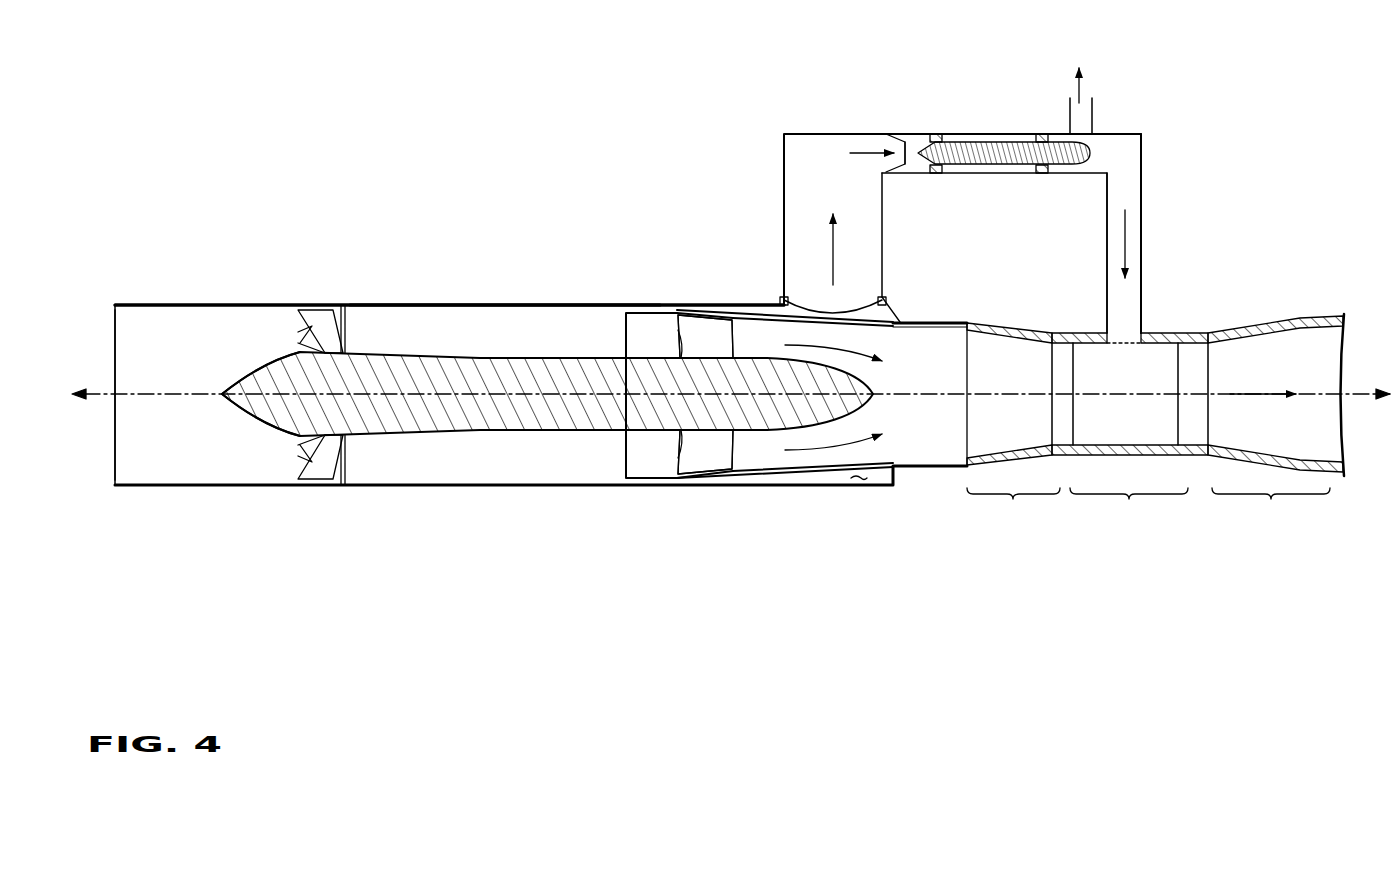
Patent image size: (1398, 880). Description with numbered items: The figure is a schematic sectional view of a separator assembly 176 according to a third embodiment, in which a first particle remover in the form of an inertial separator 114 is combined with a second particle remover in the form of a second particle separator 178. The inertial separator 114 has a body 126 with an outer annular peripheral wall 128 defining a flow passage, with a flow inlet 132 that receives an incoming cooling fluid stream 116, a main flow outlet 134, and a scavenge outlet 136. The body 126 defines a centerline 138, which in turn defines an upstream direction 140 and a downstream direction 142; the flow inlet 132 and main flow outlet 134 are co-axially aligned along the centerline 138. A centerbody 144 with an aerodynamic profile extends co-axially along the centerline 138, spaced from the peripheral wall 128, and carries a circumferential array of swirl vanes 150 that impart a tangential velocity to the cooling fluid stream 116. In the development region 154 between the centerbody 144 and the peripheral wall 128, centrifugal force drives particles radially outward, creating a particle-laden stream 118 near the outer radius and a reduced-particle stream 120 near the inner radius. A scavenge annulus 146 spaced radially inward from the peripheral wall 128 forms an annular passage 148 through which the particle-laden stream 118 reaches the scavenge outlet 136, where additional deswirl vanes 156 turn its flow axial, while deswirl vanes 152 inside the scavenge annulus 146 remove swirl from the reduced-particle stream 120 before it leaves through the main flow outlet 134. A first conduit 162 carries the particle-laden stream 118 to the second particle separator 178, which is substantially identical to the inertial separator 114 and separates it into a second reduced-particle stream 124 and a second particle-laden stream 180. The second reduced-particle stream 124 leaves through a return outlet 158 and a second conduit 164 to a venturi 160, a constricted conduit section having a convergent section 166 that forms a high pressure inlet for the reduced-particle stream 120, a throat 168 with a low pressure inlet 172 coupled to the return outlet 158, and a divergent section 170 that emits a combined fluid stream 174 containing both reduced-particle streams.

The inertial separator 114 is at (151, 297).
The cooling fluid stream 116 is at (236, 394).
The particle-laden stream 118 is at (960, 233).
The reduced-particle stream 120 is at (857, 394).
The second reduced-particle stream 124 is at (1143, 236).
The body 126 is at (423, 298).
The peripheral wall 128 is at (516, 487).
The flow inlet 132 is at (106, 382).
The main flow outlet 134 is at (980, 379).
The scavenge outlet 136 is at (893, 283).
The centerline 138 is at (586, 398).
The upstream direction 140 is at (717, 406).
The downstream direction 142 is at (1366, 395).
The centerbody 144 is at (453, 437).
The scavenge annulus 146 is at (806, 472).
The annular passage 148 is at (858, 482).
The swirl vanes 150 is at (287, 330).
The deswirl vanes 152 is at (658, 347).
The development region 154 is at (498, 340).
The additional deswirl vanes 156 is at (717, 307).
The return outlet 158 is at (1150, 168).
The venturi 160 is at (1110, 462).
The first conduit 162 is at (781, 228).
The second conduit 164 is at (1143, 285).
The convergent section 166 is at (1013, 508).
The throat 168 is at (1129, 507).
The divergent section 170 is at (1271, 508).
The low pressure inlet 172 is at (1130, 338).
The combined fluid stream 174 is at (1263, 381).
The assembly 176 is at (216, 140).
The second particle separator 178 is at (1002, 121).
The second particle-laden stream 180 is at (1094, 95).